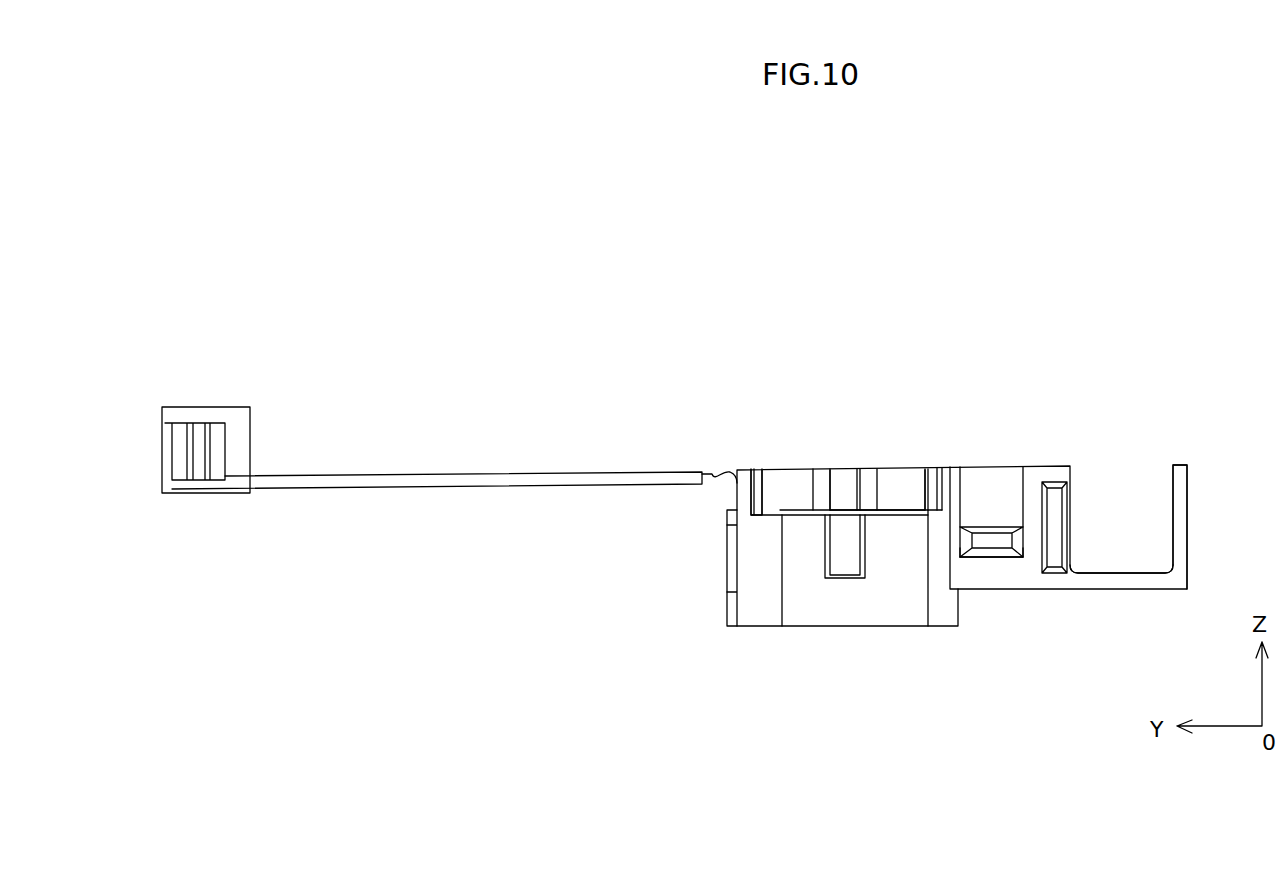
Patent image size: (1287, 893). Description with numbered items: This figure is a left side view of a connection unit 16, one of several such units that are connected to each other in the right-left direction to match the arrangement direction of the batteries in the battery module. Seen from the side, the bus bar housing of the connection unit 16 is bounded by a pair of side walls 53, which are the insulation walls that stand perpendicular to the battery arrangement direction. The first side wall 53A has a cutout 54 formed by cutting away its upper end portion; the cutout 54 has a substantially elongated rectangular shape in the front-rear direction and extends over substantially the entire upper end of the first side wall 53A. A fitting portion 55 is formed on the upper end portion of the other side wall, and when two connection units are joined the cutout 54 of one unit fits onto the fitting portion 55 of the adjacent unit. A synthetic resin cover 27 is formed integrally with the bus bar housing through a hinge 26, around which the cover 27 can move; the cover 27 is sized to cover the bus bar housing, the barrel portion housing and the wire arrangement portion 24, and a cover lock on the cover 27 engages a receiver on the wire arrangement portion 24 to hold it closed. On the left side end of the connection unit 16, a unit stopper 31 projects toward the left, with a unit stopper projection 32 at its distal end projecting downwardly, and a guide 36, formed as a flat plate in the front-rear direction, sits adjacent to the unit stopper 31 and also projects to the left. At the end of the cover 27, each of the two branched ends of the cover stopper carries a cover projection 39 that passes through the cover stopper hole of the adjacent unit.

The connection unit 16 is at (1180, 503).
The wire arrangement portion 24 is at (1113, 577).
The hinge 26 is at (720, 477).
The cover 27 is at (443, 485).
The unit stopper 31 is at (990, 535).
The unit stopper projection 32 is at (990, 550).
The guide 36 is at (1055, 545).
The cover projection 39 is at (177, 455).
The side walls 53 is at (994, 523).
The first side wall 53A is at (805, 570).
The cutout 54 is at (760, 492).
The fitting portion 55 is at (895, 485).